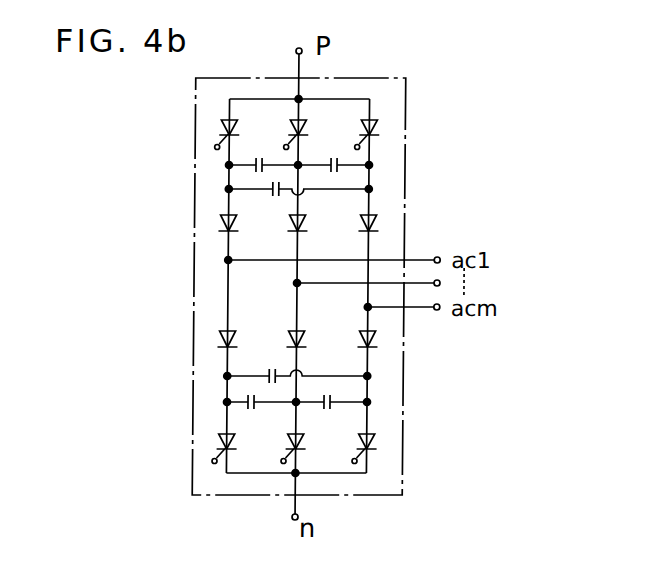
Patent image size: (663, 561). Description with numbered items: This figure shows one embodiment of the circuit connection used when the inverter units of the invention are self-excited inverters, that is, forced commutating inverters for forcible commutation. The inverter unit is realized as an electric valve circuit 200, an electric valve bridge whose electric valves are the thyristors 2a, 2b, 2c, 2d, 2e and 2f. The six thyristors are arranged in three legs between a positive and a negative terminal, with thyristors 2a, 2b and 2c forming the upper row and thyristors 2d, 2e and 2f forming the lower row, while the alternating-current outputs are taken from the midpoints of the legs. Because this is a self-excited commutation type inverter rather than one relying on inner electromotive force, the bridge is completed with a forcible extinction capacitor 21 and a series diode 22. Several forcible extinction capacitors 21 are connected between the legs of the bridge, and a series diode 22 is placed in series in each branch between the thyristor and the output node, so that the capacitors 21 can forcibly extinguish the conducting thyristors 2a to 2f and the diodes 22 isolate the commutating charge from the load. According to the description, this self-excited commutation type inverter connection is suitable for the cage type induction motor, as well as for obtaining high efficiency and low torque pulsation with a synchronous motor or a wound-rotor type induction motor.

The electric valve circuit 200 is at (195, 206).
The forcible extinction capacitor 21 is at (262, 159).
The series diode 22 is at (222, 226).
The thyristor 2a is at (243, 130).
The thyristor 2b is at (306, 128).
The thyristor 2c is at (378, 131).
The thyristor 2d is at (218, 441).
The thyristor 2e is at (289, 443).
The thyristor 2f is at (380, 441).